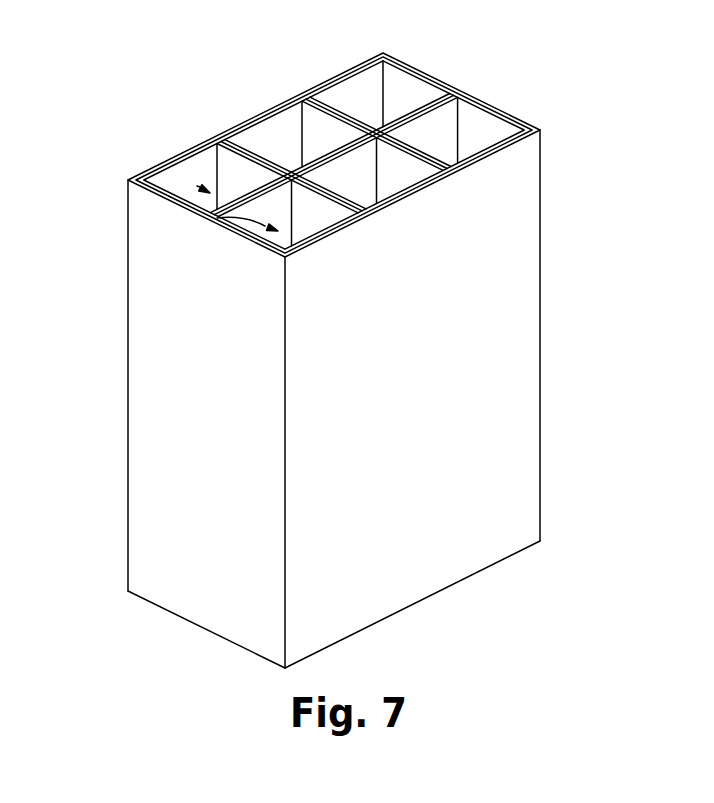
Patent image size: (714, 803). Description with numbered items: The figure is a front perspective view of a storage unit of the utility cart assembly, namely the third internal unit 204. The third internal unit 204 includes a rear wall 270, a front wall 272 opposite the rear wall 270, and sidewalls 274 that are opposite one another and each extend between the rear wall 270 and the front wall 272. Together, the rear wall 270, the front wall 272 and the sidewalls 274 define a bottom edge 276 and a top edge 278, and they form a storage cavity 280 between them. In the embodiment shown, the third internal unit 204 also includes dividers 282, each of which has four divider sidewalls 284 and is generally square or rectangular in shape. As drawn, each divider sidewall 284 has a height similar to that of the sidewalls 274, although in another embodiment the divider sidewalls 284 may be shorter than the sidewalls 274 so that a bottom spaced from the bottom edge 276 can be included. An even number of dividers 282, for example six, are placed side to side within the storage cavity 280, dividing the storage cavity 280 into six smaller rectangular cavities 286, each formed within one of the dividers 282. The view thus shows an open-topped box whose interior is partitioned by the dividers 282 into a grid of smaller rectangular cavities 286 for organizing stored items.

The third internal unit 204 is at (152, 133).
The rear wall 270 is at (498, 345).
The front wall 272 is at (138, 173).
The sidewalls 274 is at (155, 390).
The bottom edge 276 is at (453, 585).
The top edge 278 is at (423, 98).
The storage cavity 280 is at (483, 148).
The dividers 282 is at (268, 142).
The divider sidewalls 284 is at (353, 98).
The smaller rectangular cavities 286 is at (217, 218).